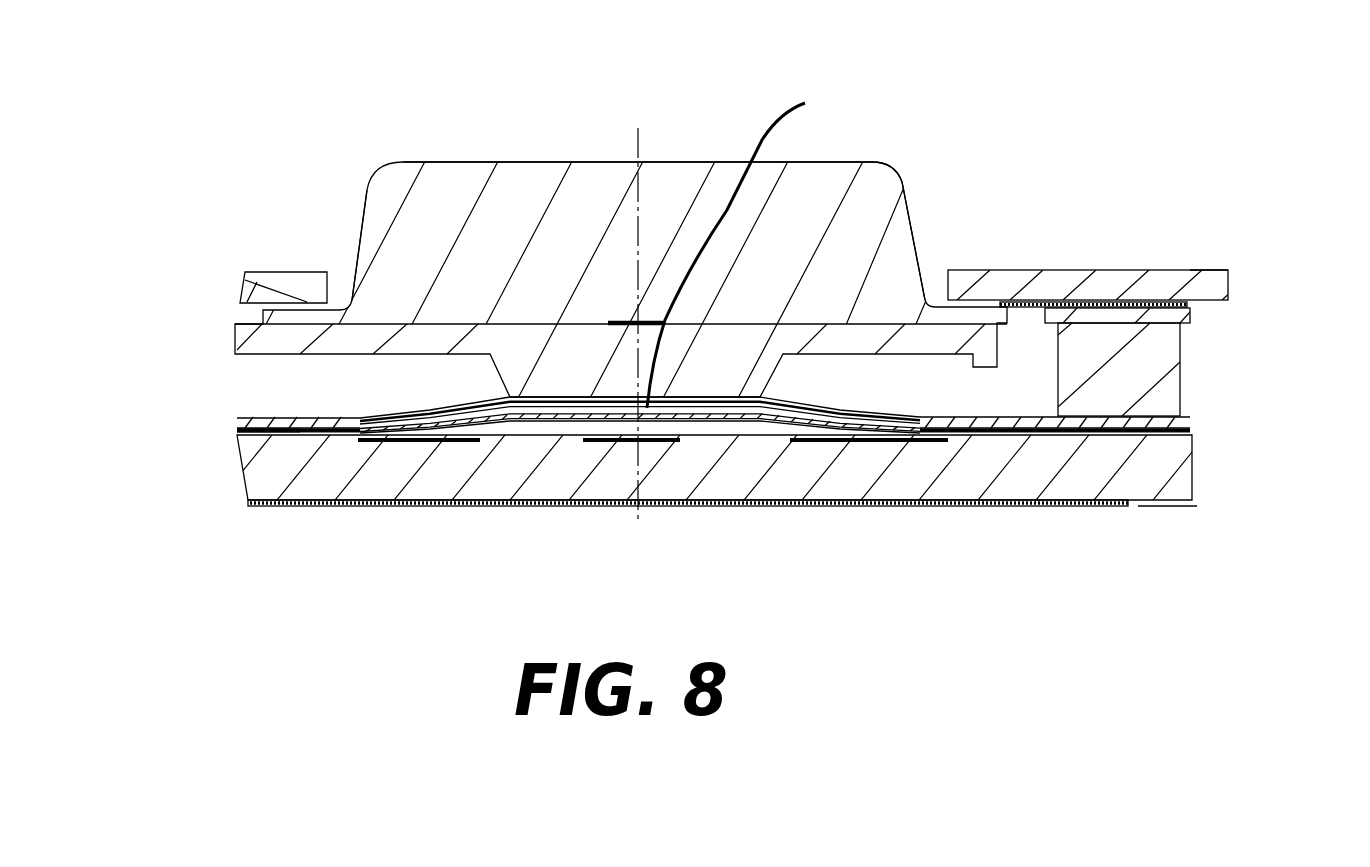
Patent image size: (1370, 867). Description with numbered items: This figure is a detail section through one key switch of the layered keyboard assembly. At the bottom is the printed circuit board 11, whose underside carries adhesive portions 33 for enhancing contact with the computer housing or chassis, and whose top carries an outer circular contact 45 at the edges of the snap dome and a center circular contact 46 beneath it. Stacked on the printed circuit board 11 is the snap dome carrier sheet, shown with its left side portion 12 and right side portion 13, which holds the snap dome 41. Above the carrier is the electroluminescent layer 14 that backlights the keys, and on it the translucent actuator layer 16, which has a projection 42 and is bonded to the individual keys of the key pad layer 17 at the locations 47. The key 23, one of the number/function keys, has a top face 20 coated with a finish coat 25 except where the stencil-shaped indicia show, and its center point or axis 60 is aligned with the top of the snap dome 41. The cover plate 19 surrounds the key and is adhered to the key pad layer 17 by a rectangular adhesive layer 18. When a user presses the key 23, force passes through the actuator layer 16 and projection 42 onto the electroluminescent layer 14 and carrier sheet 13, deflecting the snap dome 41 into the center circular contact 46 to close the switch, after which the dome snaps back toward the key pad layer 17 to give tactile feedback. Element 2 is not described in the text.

The circuit board 2 is at (272, 272).
The printed circuit board 11 is at (243, 478).
The left side portion of the carrier layer 12 is at (237, 433).
The right side portion of the carrier layer 13 is at (1180, 430).
The electroluminescent layer 14 is at (237, 418).
The actuator layer 16 is at (237, 340).
The key pad layer 17 is at (368, 242).
The adhesive layer 18 is at (1187, 305).
The cover plate 19 is at (1212, 272).
The top face 20 is at (510, 165).
The key 23 is at (909, 180).
The finish coat 25 is at (456, 162).
The adhesive portions 33 is at (1092, 510).
The snap dome 41 is at (663, 410).
The projection 42 is at (607, 372).
The outer circular contact 45 is at (423, 442).
The center circular contact 46 is at (600, 442).
The locations 47 is at (759, 244).
The center point or axis 60 is at (637, 142).